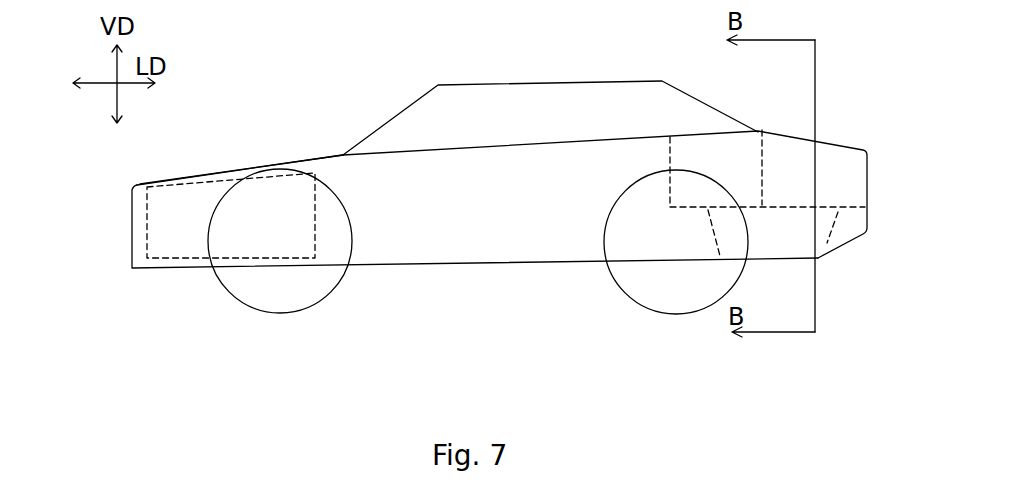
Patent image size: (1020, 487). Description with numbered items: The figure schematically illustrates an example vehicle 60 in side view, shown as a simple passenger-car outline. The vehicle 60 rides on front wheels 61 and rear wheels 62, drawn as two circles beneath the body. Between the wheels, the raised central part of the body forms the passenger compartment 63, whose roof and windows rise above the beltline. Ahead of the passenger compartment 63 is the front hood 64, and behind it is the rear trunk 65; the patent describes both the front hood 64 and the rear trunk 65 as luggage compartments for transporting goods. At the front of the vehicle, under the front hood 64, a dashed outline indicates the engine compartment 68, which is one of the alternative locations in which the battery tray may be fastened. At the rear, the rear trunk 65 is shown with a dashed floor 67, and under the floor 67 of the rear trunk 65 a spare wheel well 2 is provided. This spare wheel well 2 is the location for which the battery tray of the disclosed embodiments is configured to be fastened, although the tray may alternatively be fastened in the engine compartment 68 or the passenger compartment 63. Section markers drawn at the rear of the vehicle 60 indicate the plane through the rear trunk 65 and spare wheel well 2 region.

The spare wheel well 2 is at (790, 237).
The vehicle 60 is at (317, 116).
The front wheels 61 is at (245, 282).
The rear wheels 62 is at (637, 280).
The passenger compartment 63 is at (427, 122).
The front hood 64 is at (188, 175).
The rear trunk 65 is at (786, 177).
The floor 67 is at (762, 130).
The engine compartment 68 is at (180, 272).